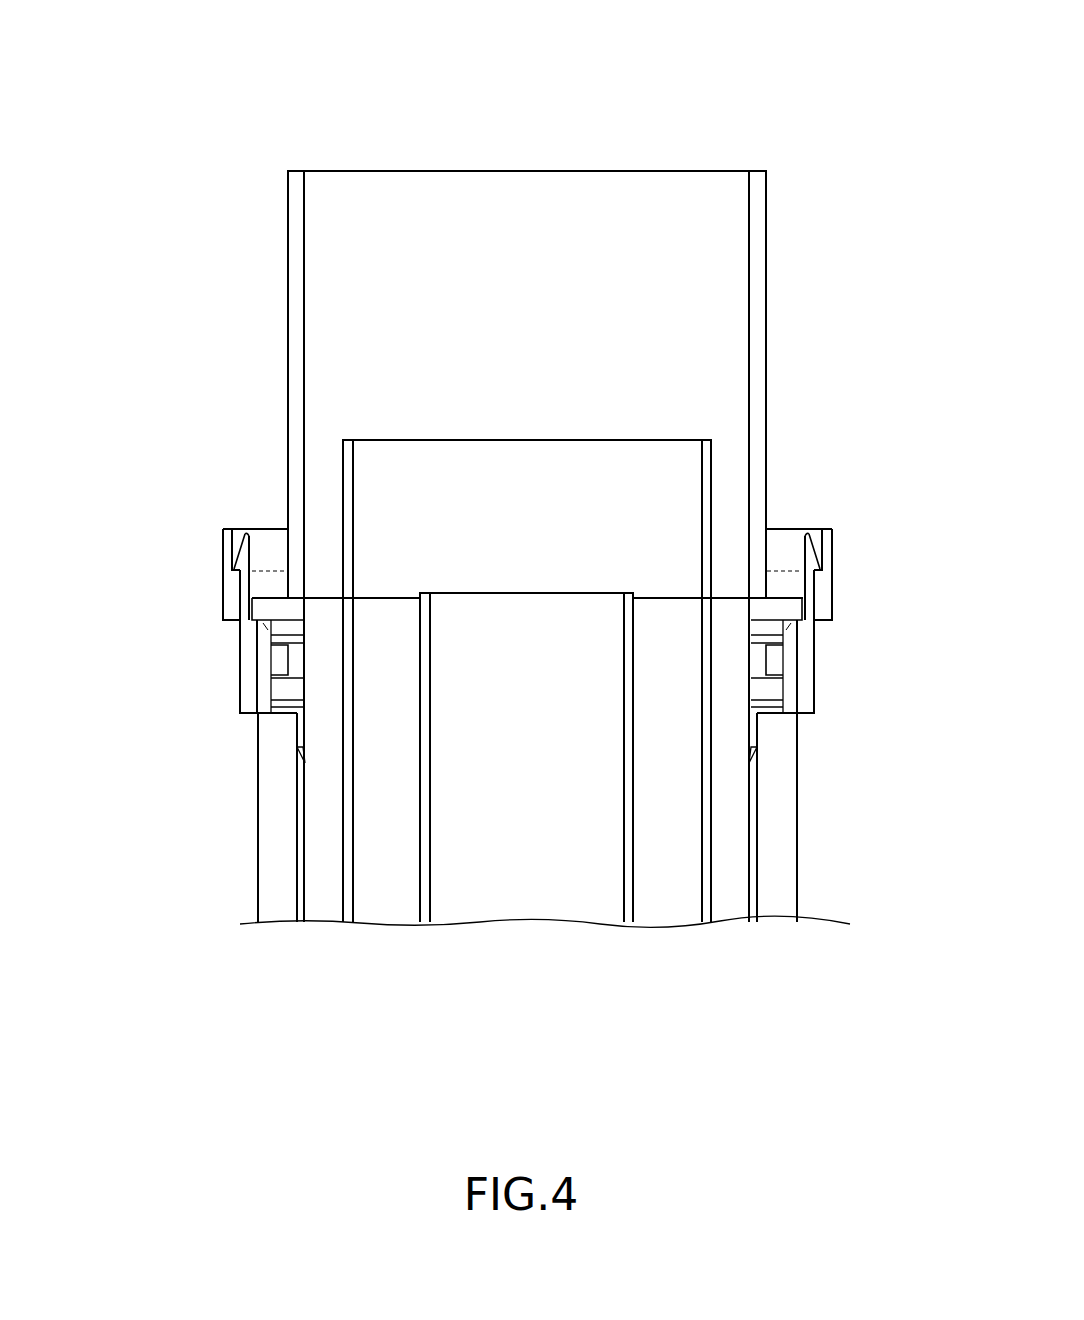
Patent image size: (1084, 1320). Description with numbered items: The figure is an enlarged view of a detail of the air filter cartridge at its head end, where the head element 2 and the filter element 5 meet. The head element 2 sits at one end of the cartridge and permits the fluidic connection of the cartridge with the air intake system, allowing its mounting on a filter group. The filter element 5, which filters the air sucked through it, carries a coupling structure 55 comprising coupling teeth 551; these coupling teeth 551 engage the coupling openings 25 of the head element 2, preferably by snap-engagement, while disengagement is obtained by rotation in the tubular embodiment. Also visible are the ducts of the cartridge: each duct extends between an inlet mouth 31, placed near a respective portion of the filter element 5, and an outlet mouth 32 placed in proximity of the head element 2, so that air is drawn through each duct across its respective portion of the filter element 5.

The head element 2 is at (835, 278).
The coupling openings 25 is at (262, 516).
The coupling teeth 551 is at (237, 591).
The coupling structure 55 is at (227, 666).
The filter element 5 is at (241, 870).
The outlet mouth 32 is at (397, 214).
The inlet mouth 31 is at (325, 908).